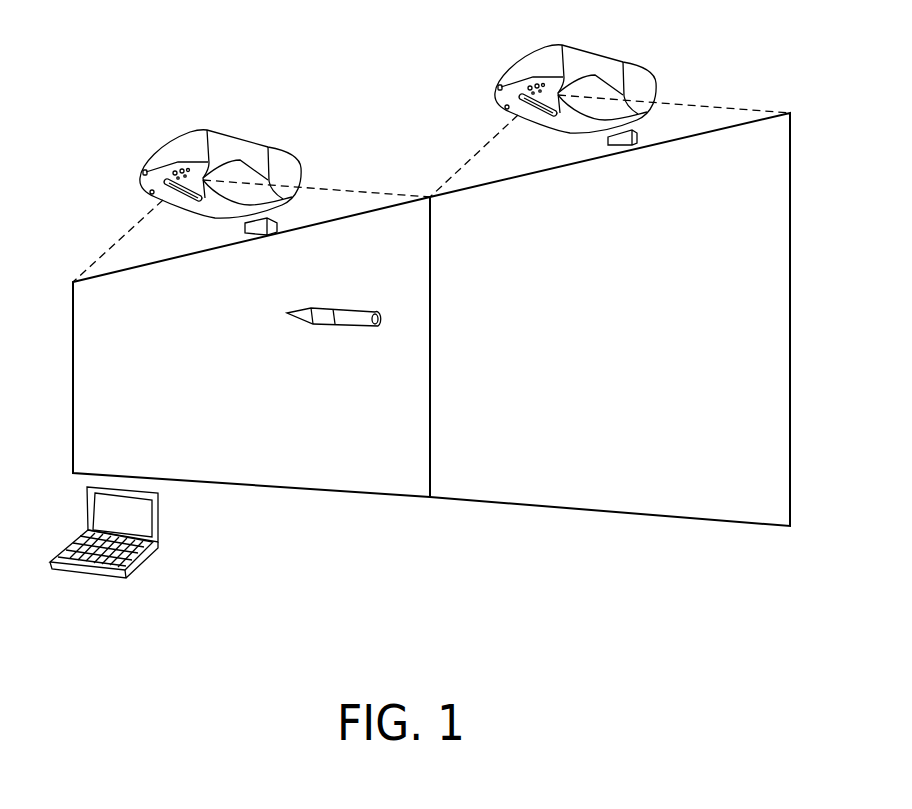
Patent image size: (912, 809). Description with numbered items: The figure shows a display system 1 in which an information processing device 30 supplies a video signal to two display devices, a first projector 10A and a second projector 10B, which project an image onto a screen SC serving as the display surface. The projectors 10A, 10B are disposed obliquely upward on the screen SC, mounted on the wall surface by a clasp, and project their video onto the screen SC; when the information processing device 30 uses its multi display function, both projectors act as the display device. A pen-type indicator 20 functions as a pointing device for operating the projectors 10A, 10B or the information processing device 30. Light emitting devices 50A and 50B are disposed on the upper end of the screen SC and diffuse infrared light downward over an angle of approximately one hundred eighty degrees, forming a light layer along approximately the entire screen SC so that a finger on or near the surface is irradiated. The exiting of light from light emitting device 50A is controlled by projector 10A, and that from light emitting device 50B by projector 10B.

The display system 1 is at (110, 168).
The projector (first projector) 10A is at (264, 114).
The projector (second projector) 10B is at (498, 90).
The pen-type indicator 20 is at (333, 311).
The information processing device 30 is at (76, 537).
The light emitting device 50A is at (245, 228).
The light emitting device 50B is at (608, 140).
The screen SC is at (73, 352).